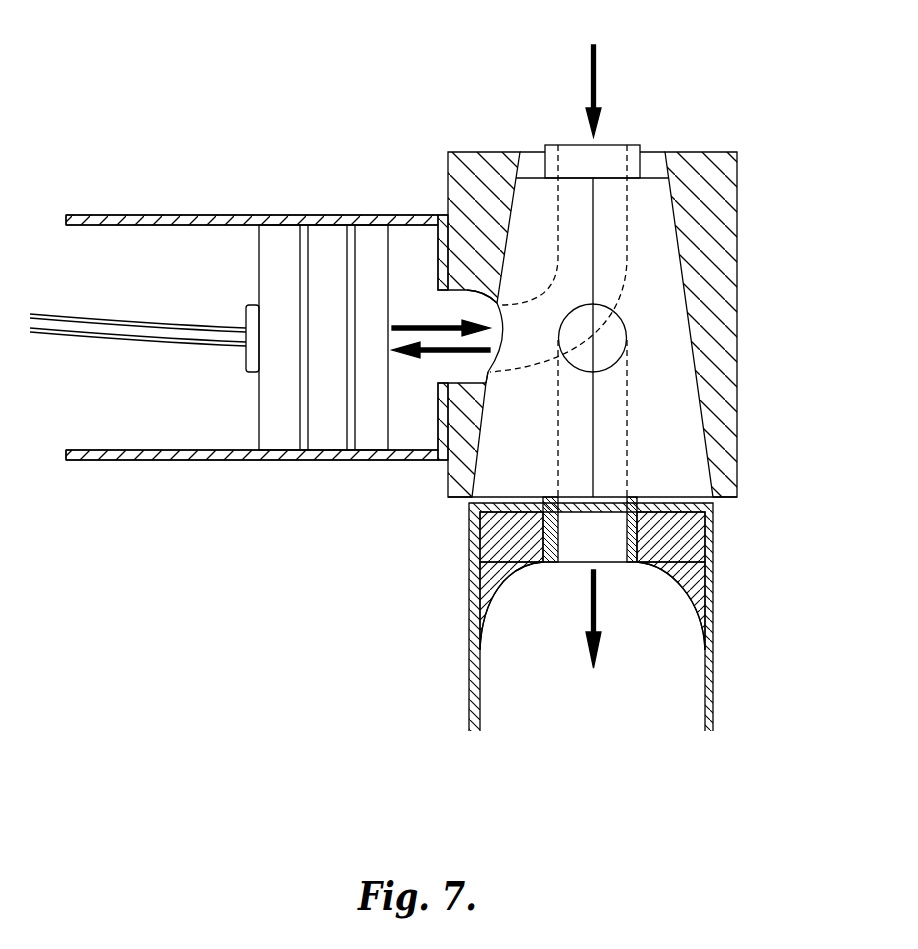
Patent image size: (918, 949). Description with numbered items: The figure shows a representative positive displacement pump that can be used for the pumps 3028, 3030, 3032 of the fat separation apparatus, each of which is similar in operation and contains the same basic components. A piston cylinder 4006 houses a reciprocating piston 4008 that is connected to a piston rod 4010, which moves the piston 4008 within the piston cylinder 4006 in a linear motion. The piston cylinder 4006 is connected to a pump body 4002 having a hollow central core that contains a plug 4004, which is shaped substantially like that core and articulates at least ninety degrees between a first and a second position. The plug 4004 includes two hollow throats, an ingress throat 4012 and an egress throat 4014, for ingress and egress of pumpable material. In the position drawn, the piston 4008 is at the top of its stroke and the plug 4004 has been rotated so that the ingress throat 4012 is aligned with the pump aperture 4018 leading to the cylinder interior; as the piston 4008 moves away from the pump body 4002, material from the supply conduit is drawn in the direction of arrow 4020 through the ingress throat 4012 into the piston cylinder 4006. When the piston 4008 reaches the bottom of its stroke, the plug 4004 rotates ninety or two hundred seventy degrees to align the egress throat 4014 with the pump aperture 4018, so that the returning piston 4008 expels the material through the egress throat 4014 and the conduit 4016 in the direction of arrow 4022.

The pump 3032 is at (578, 258).
The pump 3028 is at (578, 258).
The pump 3030 is at (578, 258).
The pump body 4002 is at (738, 242).
The plug 4004 is at (685, 430).
The piston cylinder 4006 is at (213, 215).
The reciprocating piston 4008 is at (333, 240).
The piston rod 4010 is at (114, 340).
The ingress throat 4012 is at (627, 227).
The egress throat 4014 is at (627, 386).
The conduit 4016 is at (714, 586).
The pump aperture 4018 is at (450, 372).
The arrow 4020 is at (592, 72).
The arrow 4022 is at (597, 613).